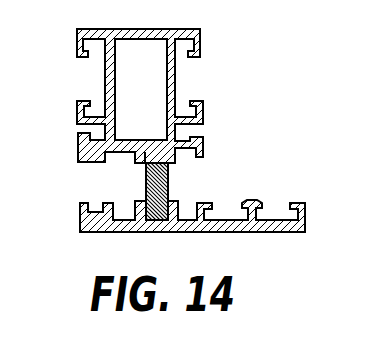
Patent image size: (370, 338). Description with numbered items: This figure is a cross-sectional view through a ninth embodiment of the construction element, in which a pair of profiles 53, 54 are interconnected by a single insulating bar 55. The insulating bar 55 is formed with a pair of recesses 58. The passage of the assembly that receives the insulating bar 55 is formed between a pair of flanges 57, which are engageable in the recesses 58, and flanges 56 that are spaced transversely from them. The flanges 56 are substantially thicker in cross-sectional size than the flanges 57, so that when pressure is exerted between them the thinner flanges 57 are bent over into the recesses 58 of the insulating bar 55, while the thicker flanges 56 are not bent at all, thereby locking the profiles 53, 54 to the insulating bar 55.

The profile 53 is at (176, 76).
The profile 54 is at (260, 231).
The insulating bar 55 is at (169, 187).
The flange 56 is at (95, 160).
The flange 57 is at (135, 160).
The recess 58 is at (176, 163).